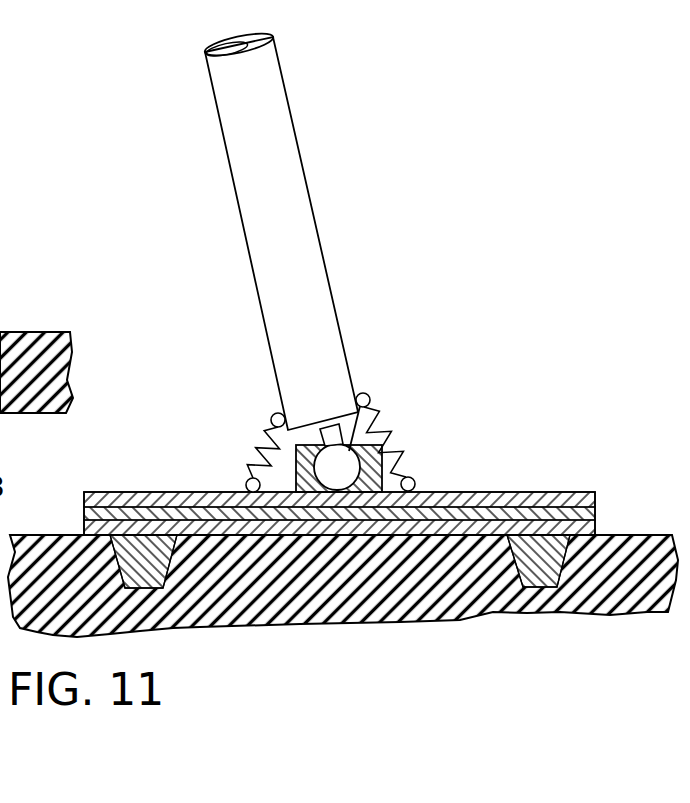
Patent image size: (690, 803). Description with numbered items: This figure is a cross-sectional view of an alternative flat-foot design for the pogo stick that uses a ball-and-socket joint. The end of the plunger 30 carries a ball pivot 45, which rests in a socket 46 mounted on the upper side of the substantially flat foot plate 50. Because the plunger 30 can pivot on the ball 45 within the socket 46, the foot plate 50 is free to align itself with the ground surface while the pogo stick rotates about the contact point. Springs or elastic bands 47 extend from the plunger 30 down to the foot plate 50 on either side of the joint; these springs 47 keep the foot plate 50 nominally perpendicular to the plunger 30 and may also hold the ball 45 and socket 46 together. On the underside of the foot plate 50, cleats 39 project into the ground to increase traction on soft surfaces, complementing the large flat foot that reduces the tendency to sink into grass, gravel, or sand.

The plunger 30 is at (310, 202).
The cleats 39 is at (163, 570).
The ball pivot 45 is at (368, 408).
The socket 46 is at (390, 445).
The springs or elastic bands 47 is at (260, 448).
The foot plate 50 is at (0, 266).